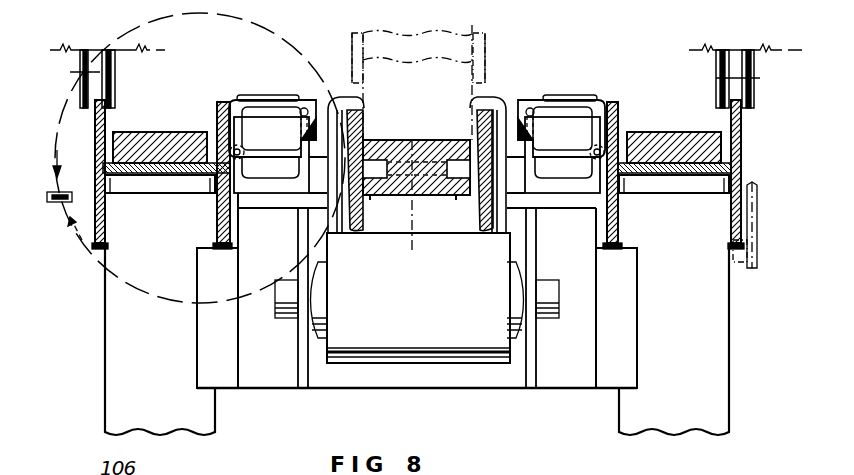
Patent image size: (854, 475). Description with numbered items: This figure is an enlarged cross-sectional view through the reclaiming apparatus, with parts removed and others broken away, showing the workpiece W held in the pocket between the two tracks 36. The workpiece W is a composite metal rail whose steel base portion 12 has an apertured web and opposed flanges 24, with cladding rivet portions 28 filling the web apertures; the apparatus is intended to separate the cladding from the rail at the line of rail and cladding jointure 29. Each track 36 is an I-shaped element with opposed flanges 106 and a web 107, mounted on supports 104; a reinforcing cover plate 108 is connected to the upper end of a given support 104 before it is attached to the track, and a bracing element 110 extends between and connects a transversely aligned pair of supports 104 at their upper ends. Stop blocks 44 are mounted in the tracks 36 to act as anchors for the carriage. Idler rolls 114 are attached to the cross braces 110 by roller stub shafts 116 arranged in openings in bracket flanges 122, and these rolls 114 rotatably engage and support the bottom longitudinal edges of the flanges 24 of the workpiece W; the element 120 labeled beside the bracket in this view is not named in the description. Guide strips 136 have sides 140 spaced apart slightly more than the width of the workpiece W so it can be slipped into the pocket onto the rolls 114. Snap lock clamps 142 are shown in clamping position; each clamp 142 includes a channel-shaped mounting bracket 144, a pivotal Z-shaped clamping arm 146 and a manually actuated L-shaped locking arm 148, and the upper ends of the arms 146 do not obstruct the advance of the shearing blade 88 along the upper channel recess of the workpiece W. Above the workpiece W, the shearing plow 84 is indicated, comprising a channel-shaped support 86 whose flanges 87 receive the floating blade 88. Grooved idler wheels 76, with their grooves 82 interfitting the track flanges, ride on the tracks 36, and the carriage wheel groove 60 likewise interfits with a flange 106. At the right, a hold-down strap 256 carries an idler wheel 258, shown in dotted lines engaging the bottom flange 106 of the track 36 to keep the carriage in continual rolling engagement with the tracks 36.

The base portion 12 is at (347, 100).
The opposed flanges 24 is at (360, 210).
The rivet portions 28 is at (415, 206).
The line of rail and cladding jointure 29 is at (455, 150).
The tracks 36 is at (745, 152).
The stop blocks 44 is at (675, 132).
The groove 60 is at (90, 108).
The grooved idler wheels 76 is at (792, 108).
The grooves 82 is at (790, 82).
The shearing plow 84 is at (437, 70).
The channel-shaped support 86 is at (390, 44).
The flanges of channel 87 is at (483, 26).
The shearing blade 88 is at (413, 110).
The supports 104 is at (170, 345).
The flanges 106 is at (217, 118).
The web 107 is at (705, 235).
The reinforcing cover plate 108 is at (655, 220).
The bracing element 110 is at (657, 390).
The idler rolls 114 is at (423, 320).
The roller stub shafts 116 is at (557, 300).
The shaft bracket 120 is at (555, 373).
The bracket flanges 122 is at (302, 372).
The guide strip 136 is at (252, 96).
The sides of strips 140 is at (498, 217).
The snap lock clamps 142 is at (233, 98).
The channel-shaped mounting bracket 144 is at (598, 122).
The Z-shaped clamping arm 146 is at (568, 150).
The L-shaped pivotal locking arm 148 is at (262, 99).
The strap 256 is at (757, 208).
The idler wheel 258 is at (737, 252).
The composite metal rail W is at (428, 195).